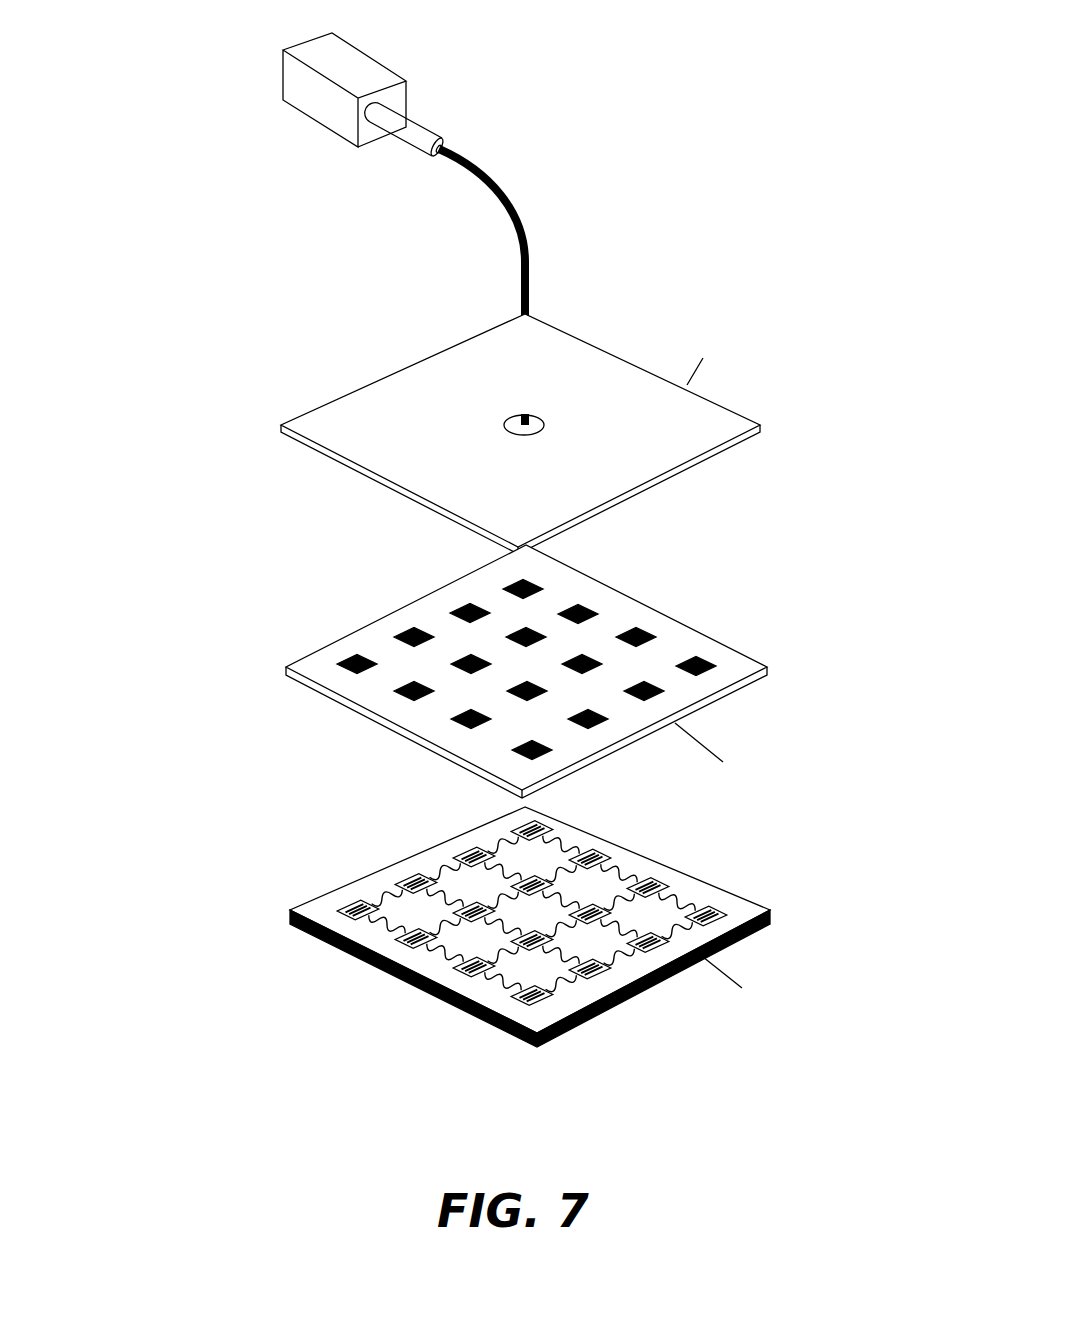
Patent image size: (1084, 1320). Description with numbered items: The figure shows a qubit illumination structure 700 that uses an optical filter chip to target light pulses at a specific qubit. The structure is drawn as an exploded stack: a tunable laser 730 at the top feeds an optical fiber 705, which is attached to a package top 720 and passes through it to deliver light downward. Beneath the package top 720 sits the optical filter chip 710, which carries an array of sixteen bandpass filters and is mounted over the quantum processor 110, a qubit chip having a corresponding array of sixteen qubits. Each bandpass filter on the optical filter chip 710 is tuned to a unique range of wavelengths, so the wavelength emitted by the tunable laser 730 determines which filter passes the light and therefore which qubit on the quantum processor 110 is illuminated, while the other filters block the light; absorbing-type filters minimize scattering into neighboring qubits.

The qubit illumination structure 700 is at (187, 310).
The optical fiber 705 is at (493, 200).
The optical filter chip 710 is at (325, 695).
The package top 720 is at (317, 455).
The tunable laser 730 is at (303, 115).
The quantum processor 110 is at (382, 967).